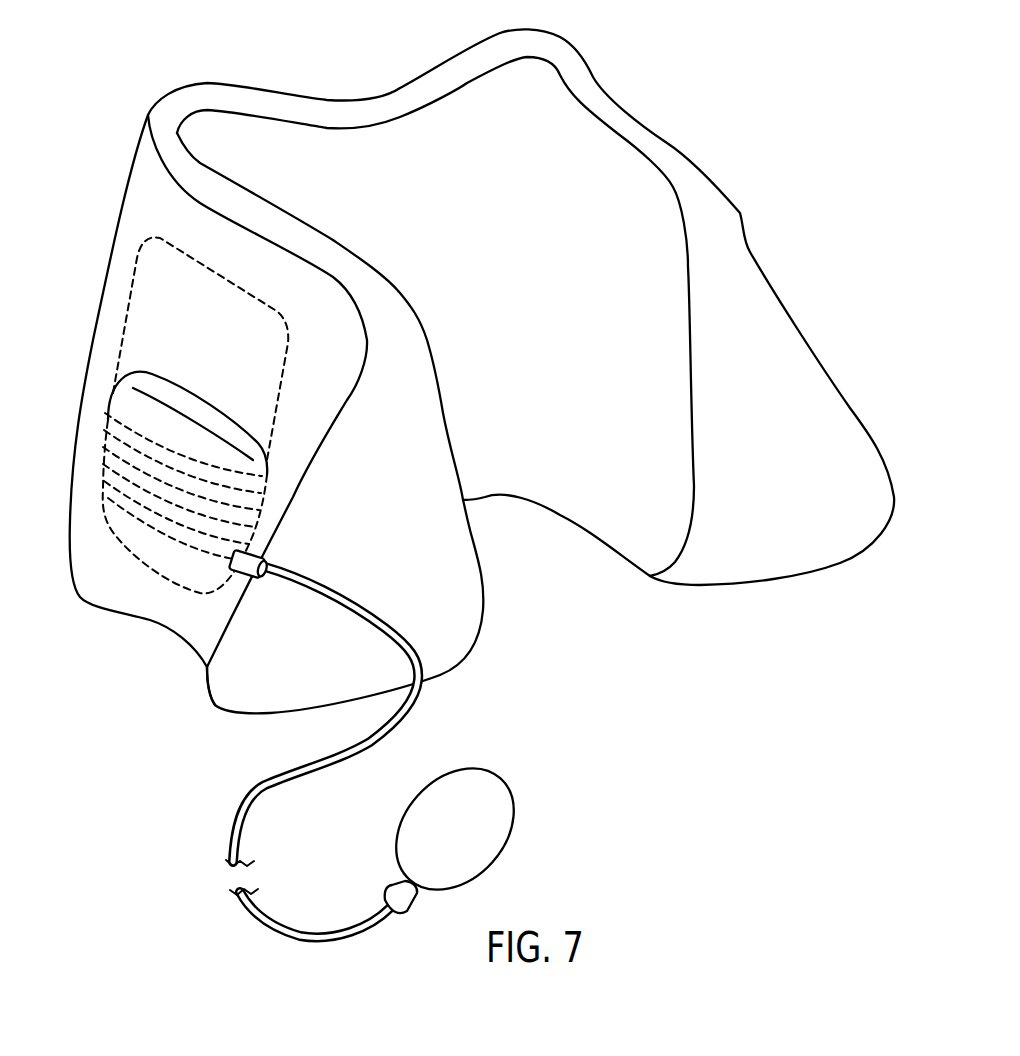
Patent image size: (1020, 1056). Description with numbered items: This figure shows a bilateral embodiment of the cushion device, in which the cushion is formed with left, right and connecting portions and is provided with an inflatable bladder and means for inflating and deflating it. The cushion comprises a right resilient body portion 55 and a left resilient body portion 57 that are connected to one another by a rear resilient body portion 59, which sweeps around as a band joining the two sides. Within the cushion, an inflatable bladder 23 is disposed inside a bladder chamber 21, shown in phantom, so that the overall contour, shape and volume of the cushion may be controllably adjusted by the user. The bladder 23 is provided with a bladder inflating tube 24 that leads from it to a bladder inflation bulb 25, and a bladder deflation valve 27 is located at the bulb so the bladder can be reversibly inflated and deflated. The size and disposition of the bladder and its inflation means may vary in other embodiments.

The bladder chamber 21 is at (163, 320).
The inflatable bladder 23 is at (137, 487).
The bladder inflating tube 24 is at (412, 708).
The bladder inflation bulb 25 is at (500, 812).
The bladder deflation valve 27 is at (397, 907).
The right resilient body portion 55 is at (250, 670).
The left resilient body portion 57 is at (806, 546).
The rear resilient body portion 59 is at (387, 183).